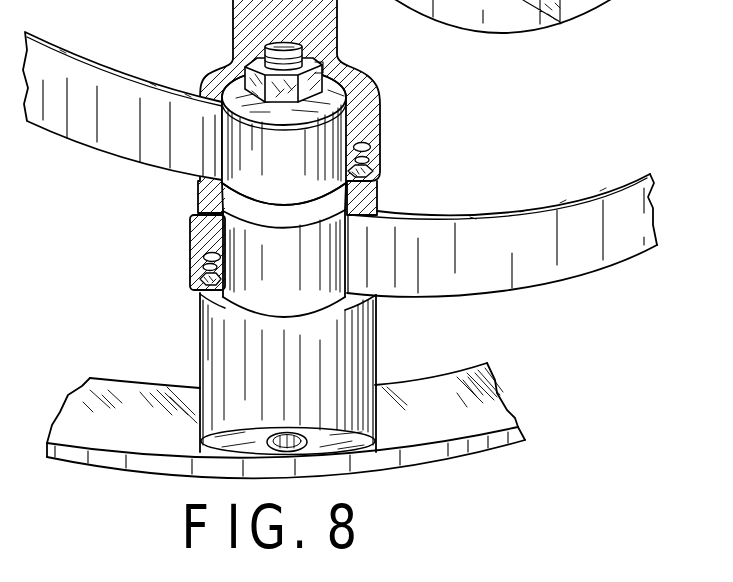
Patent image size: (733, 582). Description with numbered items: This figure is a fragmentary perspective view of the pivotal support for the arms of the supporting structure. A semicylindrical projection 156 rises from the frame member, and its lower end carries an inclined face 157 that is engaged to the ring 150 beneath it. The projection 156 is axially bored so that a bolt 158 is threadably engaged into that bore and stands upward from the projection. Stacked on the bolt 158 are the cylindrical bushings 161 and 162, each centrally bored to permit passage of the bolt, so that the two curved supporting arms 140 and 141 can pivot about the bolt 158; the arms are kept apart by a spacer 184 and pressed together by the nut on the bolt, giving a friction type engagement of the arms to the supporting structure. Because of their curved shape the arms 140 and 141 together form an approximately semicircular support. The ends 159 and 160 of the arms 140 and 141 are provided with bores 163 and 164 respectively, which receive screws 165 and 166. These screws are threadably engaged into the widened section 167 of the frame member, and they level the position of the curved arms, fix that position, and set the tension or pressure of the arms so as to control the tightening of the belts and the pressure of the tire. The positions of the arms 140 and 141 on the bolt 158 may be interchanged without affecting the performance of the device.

The supporting arm 140 is at (492, 221).
The supporting arm 141 is at (93, 78).
The ring 150 is at (468, 423).
The semicylindrical projection 156 is at (298, 383).
The inclined face 157 is at (379, 442).
The bolt 158 is at (323, 64).
The bushing (end of arm) 159 is at (207, 228).
The bushing (end of arm) 160 is at (370, 119).
The bushing 161 is at (302, 257).
The bushing 162 is at (301, 149).
The bore 163 is at (203, 256).
The bore 164 is at (372, 147).
The screw 165 is at (202, 277).
The screw 166 is at (355, 168).
The widened section 167 is at (376, 192).
The spacer 184 is at (240, 203).